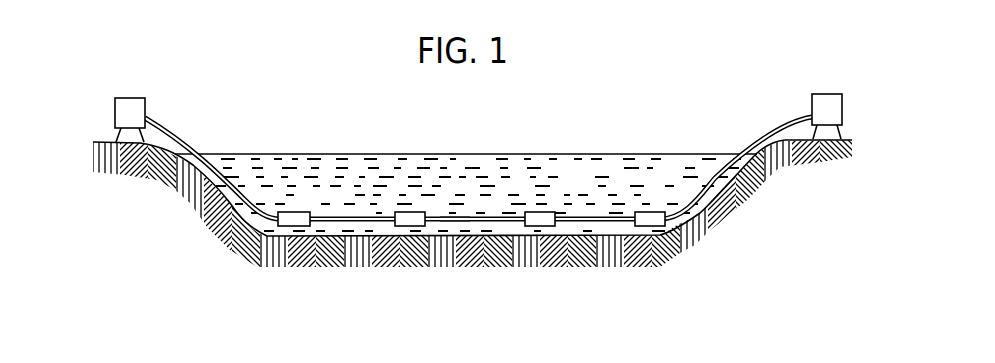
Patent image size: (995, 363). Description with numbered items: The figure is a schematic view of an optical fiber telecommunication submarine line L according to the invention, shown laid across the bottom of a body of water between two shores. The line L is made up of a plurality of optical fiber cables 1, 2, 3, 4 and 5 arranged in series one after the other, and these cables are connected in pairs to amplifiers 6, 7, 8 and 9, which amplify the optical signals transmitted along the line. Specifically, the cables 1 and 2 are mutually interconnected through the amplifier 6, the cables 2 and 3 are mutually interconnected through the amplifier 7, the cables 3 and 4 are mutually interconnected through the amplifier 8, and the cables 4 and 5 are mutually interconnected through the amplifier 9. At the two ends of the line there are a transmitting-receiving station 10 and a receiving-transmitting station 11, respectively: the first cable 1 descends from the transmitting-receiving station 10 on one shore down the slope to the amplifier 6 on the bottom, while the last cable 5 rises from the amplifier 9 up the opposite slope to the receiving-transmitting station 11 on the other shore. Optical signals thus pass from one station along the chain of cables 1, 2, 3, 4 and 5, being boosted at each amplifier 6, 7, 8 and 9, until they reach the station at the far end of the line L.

The optical fiber cable 1 is at (227, 163).
The optical fiber cable 2 is at (342, 217).
The optical fiber cable 3 is at (467, 217).
The optical fiber cable 4 is at (595, 217).
The optical fiber cable 5 is at (714, 167).
The amplifier 6 is at (292, 212).
The amplifier 7 is at (405, 212).
The amplifier 8 is at (539, 212).
The amplifier 9 is at (648, 212).
The transmitting-receiving station 10 is at (115, 112).
The receiving-transmitting station 11 is at (837, 104).
The optical fiber telecommunication submarine line L is at (456, 228).